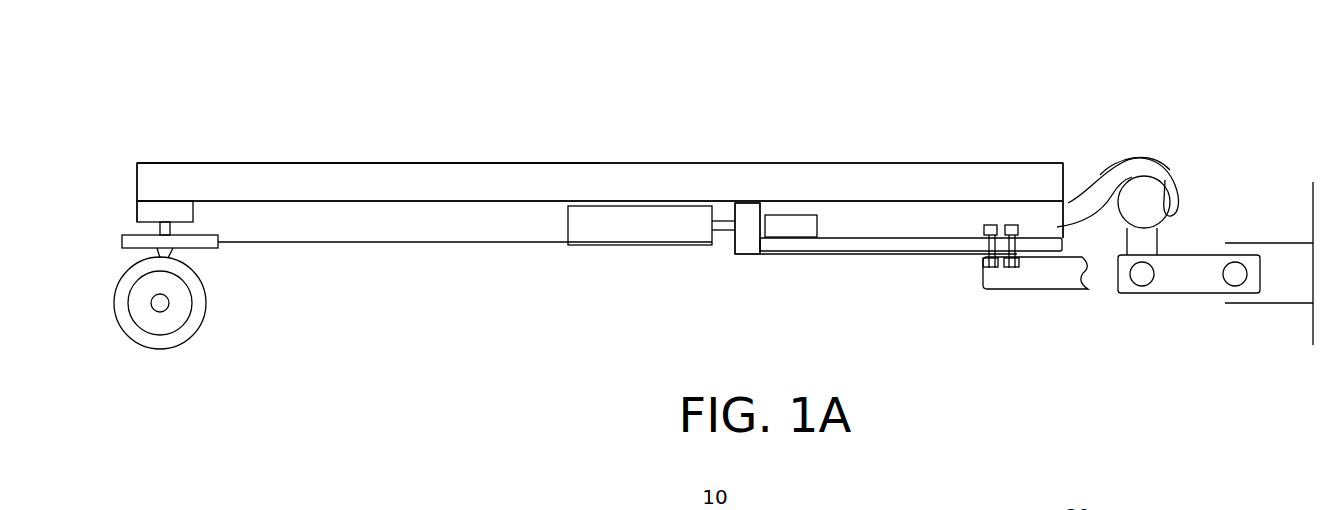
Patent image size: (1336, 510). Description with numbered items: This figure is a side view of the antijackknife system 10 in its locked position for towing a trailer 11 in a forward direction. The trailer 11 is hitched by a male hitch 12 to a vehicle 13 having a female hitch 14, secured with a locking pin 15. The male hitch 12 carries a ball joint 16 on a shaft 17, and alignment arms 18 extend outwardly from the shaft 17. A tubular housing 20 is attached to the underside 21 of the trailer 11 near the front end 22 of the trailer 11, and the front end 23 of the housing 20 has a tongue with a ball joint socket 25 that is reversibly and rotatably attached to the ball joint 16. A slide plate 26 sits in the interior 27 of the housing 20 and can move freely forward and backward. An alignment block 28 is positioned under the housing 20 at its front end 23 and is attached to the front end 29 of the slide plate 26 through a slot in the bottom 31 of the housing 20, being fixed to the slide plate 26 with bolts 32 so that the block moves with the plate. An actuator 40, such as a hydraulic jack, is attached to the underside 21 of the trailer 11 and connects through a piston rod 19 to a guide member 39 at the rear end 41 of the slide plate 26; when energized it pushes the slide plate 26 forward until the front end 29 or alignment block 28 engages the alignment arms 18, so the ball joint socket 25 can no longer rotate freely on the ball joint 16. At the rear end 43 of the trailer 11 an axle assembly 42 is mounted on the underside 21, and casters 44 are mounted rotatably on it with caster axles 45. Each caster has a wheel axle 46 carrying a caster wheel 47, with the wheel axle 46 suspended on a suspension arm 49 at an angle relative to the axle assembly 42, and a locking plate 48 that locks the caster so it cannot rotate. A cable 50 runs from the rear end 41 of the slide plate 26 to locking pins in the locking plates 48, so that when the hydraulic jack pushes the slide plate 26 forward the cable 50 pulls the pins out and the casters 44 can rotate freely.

The antijackknife system 10 is at (690, 128).
The trailer 11 is at (325, 162).
The male hitch 12 is at (1178, 294).
The vehicle 13 is at (1313, 345).
The female hitch 14 is at (1265, 243).
The locking pin 15 is at (1237, 277).
The ball joint 16 is at (1147, 193).
The shaft 17 is at (1186, 273).
The alignment arms 18 is at (1142, 277).
The piston rod 19 is at (727, 217).
The tubular housing 20 is at (883, 222).
The underside 21 is at (255, 200).
The front end 22 is at (1065, 163).
The front end 23 is at (1084, 183).
The ball joint socket 25 is at (1147, 165).
The slide plate 26 is at (915, 243).
The interior 27 is at (850, 214).
The alignment block 28 is at (1040, 293).
The front end 29 is at (1045, 243).
The bottom 31 is at (968, 260).
The bolts 32 is at (985, 272).
The guide member 39 is at (783, 222).
The actuator 40 is at (625, 228).
The rear end 41 is at (755, 247).
The axle assembly 42 is at (143, 212).
The rear end 43 is at (137, 182).
The casters 44 is at (159, 372).
The caster axles 45 is at (173, 228).
The wheel axle 46 is at (160, 303).
The caster wheels 47 is at (200, 325).
The locking plates 48 is at (200, 250).
The suspension arm 49 is at (160, 250).
The cable 50 is at (445, 243).